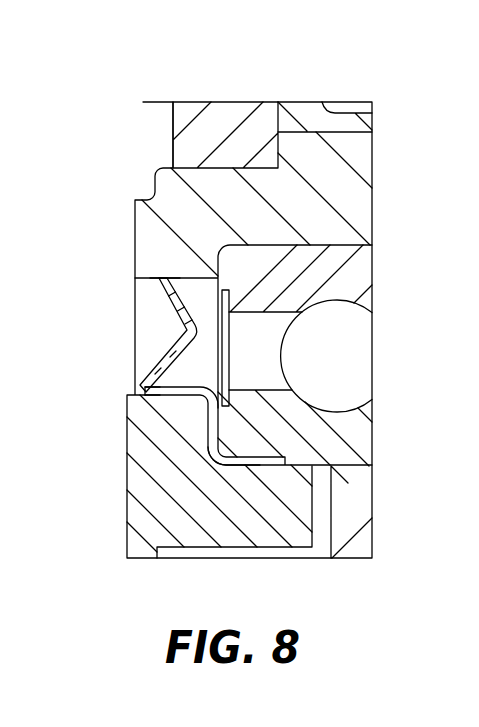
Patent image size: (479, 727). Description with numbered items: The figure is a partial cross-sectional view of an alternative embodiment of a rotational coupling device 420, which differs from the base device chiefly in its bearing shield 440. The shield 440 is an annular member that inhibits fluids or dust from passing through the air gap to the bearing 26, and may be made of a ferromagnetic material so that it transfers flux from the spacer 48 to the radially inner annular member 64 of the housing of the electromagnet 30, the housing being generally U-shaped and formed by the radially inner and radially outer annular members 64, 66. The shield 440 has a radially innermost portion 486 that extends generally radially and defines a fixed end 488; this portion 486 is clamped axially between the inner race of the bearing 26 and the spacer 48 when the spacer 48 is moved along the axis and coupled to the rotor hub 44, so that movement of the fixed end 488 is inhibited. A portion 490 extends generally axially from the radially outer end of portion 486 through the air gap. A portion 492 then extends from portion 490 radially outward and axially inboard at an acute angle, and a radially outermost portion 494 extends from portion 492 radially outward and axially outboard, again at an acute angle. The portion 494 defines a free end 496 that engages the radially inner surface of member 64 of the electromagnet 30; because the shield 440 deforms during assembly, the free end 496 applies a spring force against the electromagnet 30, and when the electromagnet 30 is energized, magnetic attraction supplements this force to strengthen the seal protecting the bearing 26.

The rotational coupling device 420 is at (104, 108).
The electromagnet 30 is at (310, 83).
The radially outer annular member 66 is at (243, 115).
The radially inner annular member 64 is at (340, 198).
The bearing 26 is at (355, 364).
The bearing shield 440 is at (208, 364).
The portion of shield 492 is at (165, 361).
The radially outermost portion of shield 494 is at (165, 297).
The free end of shield 496 is at (158, 275).
The radially innermost portion of shield 486 is at (203, 432).
The axially extending portion of shield 490 is at (162, 398).
The fixed end of shield 488 is at (195, 466).
The rotor hub 44 is at (362, 523).
The spacer 48 is at (263, 528).